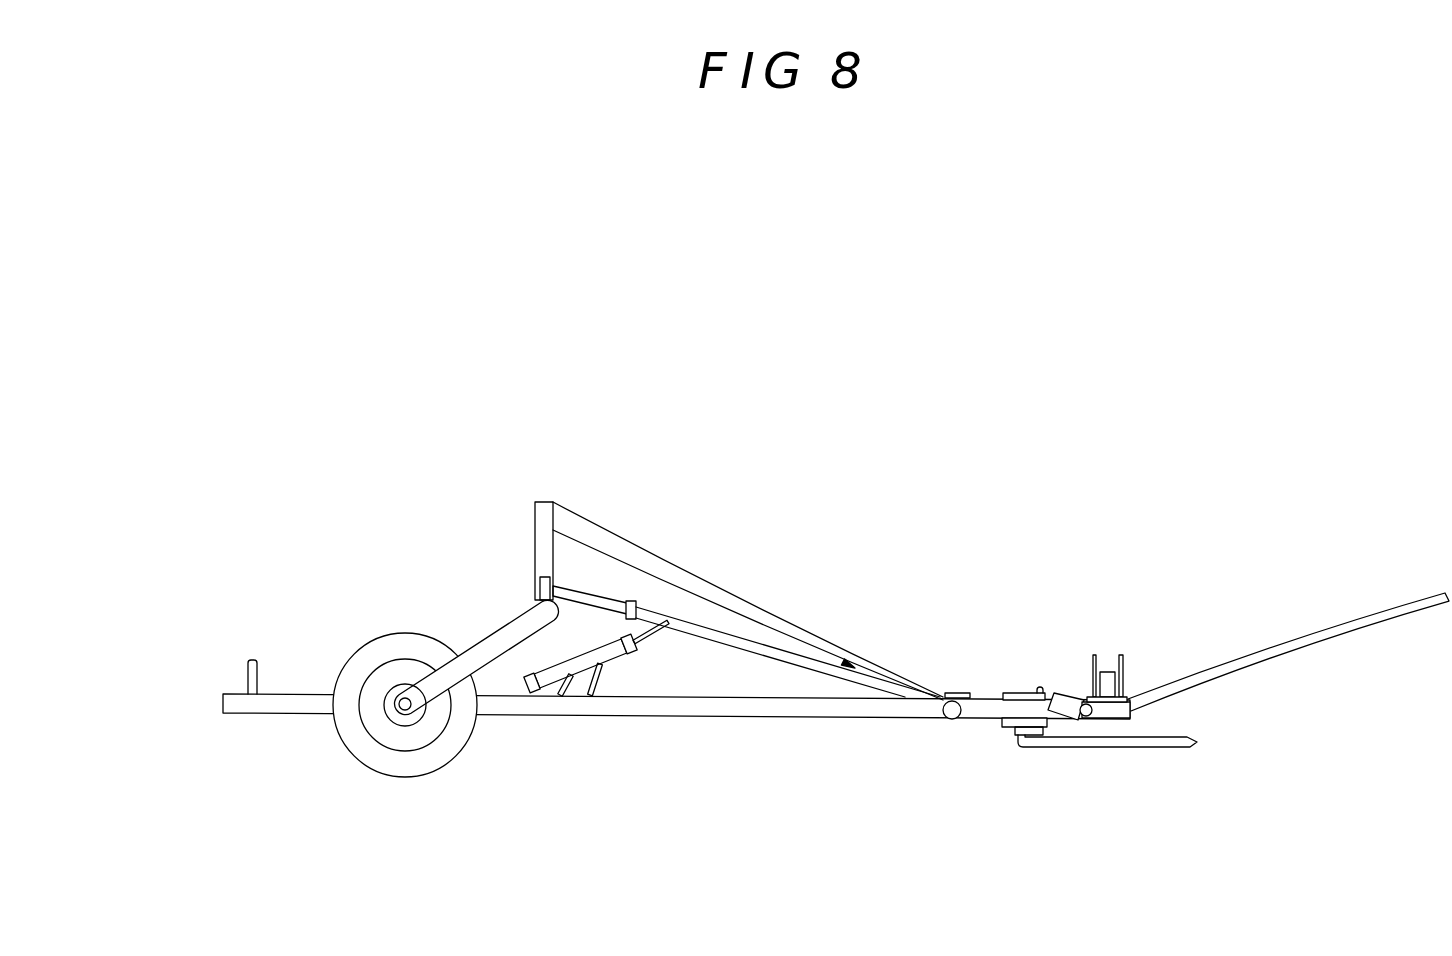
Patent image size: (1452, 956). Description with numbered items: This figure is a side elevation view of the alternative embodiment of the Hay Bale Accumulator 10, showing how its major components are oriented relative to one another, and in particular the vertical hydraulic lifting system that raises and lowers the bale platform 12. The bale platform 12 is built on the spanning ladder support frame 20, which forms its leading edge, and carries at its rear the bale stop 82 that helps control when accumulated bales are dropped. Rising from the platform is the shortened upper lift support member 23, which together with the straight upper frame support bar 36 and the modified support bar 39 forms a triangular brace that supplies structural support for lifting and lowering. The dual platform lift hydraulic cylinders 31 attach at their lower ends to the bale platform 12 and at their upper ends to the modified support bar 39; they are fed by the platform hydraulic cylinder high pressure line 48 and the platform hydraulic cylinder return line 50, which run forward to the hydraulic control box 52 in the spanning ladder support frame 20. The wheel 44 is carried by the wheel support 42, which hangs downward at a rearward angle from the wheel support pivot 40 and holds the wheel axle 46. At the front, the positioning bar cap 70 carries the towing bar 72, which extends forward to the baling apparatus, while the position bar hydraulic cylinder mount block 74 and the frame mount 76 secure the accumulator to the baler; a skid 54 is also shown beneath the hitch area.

The Hay Bale Accumulator 10 is at (283, 537).
The bale platform 12 is at (550, 737).
The spanning ladder support frame 20 is at (978, 739).
The shortened upper lift support member 23 is at (521, 531).
The dual platform lift hydraulic cylinders 31 is at (551, 646).
The straight upper frame support bar 36 is at (800, 606).
The modified support bar 39 is at (756, 625).
The wheel support pivot 40 is at (561, 584).
The wheel support 42 is at (520, 661).
The wheel 44 is at (330, 770).
The wheel axle 46 is at (404, 726).
The platform hydraulic cylinder high pressure line 48 is at (619, 668).
The platform hydraulic cylinder return line 50 is at (591, 686).
The hydraulic control box 52 is at (1009, 680).
The skid 54 is at (1095, 763).
The positioning bar cap 70 is at (1122, 732).
The towing bar 72 is at (1307, 677).
The position bar hydraulic cylinder mount block 74 is at (1073, 681).
The frame mount 76 is at (1136, 642).
The bale stop 82 is at (230, 667).